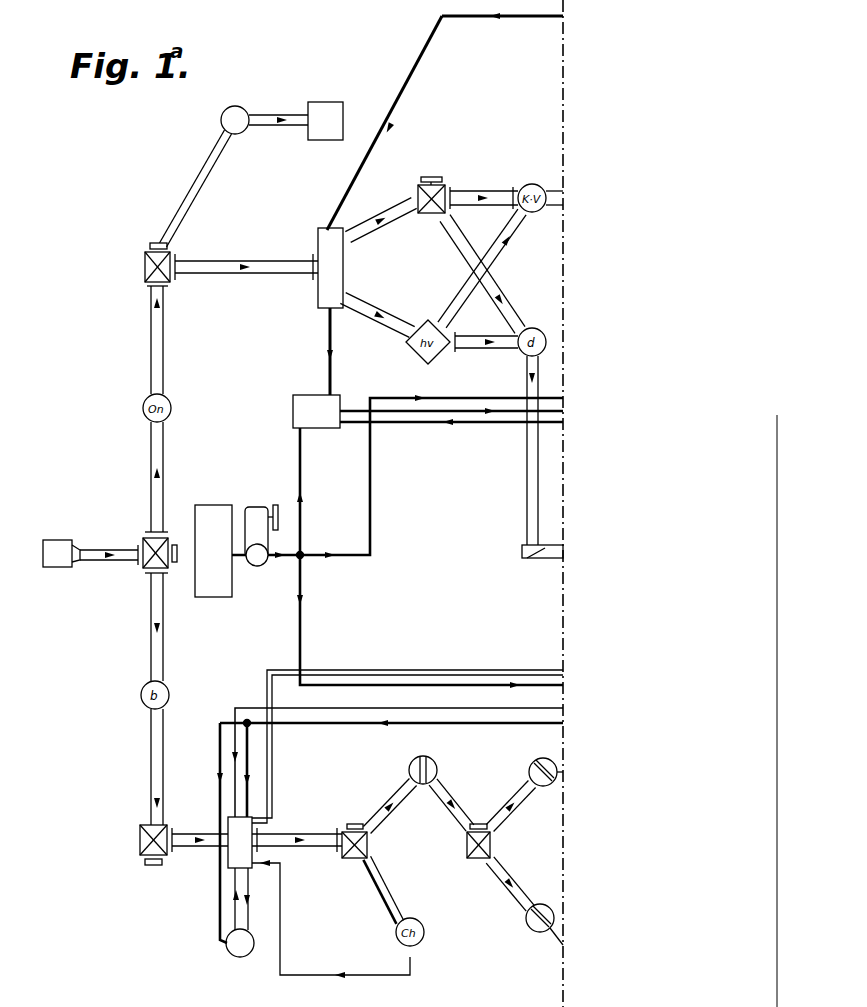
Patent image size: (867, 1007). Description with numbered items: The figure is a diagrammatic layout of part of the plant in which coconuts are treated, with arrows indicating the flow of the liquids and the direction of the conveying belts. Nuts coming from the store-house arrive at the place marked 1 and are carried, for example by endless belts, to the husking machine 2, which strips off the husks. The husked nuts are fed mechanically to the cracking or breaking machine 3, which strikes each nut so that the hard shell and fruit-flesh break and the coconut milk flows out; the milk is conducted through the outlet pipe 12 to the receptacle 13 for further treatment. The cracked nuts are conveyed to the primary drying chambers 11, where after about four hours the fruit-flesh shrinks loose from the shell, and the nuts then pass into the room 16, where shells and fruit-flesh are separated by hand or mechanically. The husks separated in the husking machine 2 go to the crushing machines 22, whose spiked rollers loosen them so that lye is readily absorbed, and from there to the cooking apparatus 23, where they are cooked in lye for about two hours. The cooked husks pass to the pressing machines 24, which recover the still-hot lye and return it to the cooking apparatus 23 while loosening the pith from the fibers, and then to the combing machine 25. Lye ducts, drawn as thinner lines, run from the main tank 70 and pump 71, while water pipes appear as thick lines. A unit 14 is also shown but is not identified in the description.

The place where nuts arrive 1 is at (52, 540).
The husking machine 2 is at (143, 540).
The cracking or breaking machine 3 is at (145, 266).
The primary drying chambers 11 is at (320, 246).
The outlet pipe 12 is at (251, 116).
The receptacle 13 is at (341, 118).
The control unit 14 is at (293, 408).
The room 16 is at (435, 183).
The crushing machines 22 is at (140, 838).
The cooking apparatus 23 is at (236, 857).
The pressing machines 24 is at (346, 830).
The combing machine 25 is at (474, 860).
The main tank 70 is at (208, 597).
The pump 71 is at (258, 566).